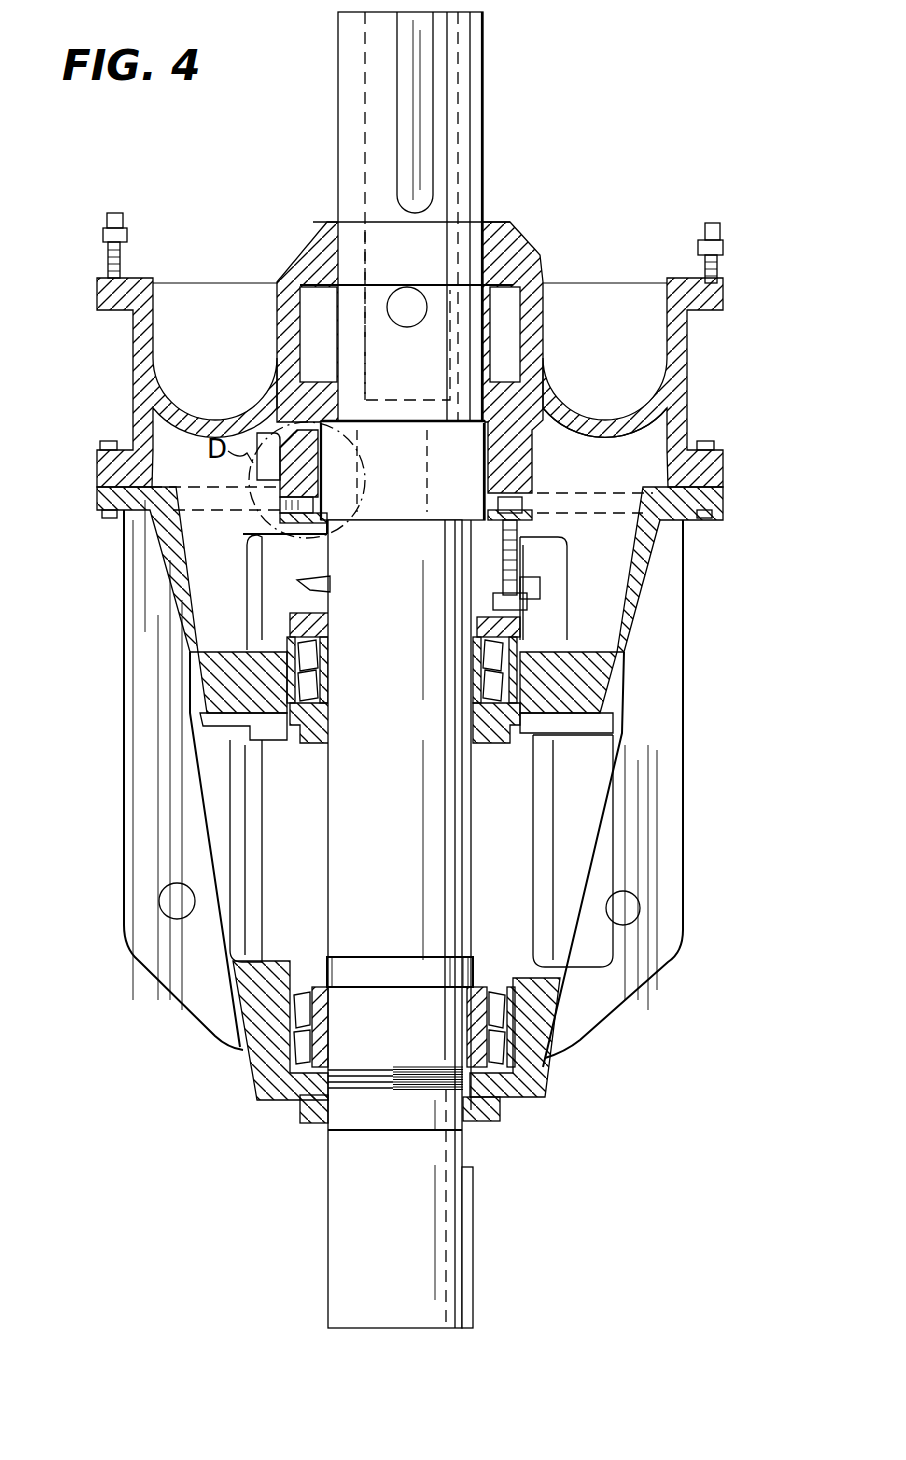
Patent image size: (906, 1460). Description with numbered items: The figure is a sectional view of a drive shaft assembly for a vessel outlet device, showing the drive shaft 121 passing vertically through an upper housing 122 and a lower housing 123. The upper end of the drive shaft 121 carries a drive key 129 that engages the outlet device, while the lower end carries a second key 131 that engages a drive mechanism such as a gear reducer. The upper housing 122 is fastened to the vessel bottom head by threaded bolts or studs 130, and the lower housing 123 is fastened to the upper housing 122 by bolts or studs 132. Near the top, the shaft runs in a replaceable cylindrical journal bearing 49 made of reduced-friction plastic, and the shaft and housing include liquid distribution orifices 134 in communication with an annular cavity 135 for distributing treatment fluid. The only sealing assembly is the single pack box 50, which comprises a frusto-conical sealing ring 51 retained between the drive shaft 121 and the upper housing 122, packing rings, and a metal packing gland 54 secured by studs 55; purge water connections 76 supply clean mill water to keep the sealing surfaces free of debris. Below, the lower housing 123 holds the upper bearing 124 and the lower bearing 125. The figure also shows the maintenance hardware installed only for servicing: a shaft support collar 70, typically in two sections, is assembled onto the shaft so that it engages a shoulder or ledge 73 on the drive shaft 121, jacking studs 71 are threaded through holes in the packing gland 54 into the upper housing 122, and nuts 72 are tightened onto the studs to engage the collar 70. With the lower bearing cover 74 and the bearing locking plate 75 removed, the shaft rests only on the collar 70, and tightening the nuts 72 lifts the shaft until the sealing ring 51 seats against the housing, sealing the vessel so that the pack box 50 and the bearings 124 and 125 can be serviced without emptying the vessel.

The drive shaft 121 is at (488, 138).
The drive key 129 is at (420, 80).
The cylindrical journal bearing 49 is at (497, 214).
The annular cavity 135 is at (503, 300).
The liquid distribution orifice 134 is at (403, 325).
The upper housing 122 is at (690, 395).
The threaded bolts or studs 130 is at (105, 226).
The bolts or studs 132 is at (100, 447).
The frusto-conical sealing ring 51 is at (478, 440).
The purge water connection 76 is at (537, 437).
The pack box 50 is at (280, 496).
The studs 55 is at (317, 513).
The metal packing gland 54 is at (530, 513).
The jacking studs 71 is at (530, 562).
The shaft support collar 70 is at (530, 583).
The nuts 72 is at (523, 610).
The shoulder or ledge 73 is at (358, 572).
The bearing 124 is at (273, 683).
The lower housing 123 is at (678, 803).
The bearing 125 is at (287, 1040).
The lower bearing cover 74 is at (282, 1117).
The bearing locking plate 75 is at (330, 1097).
The second key 131 is at (470, 1250).